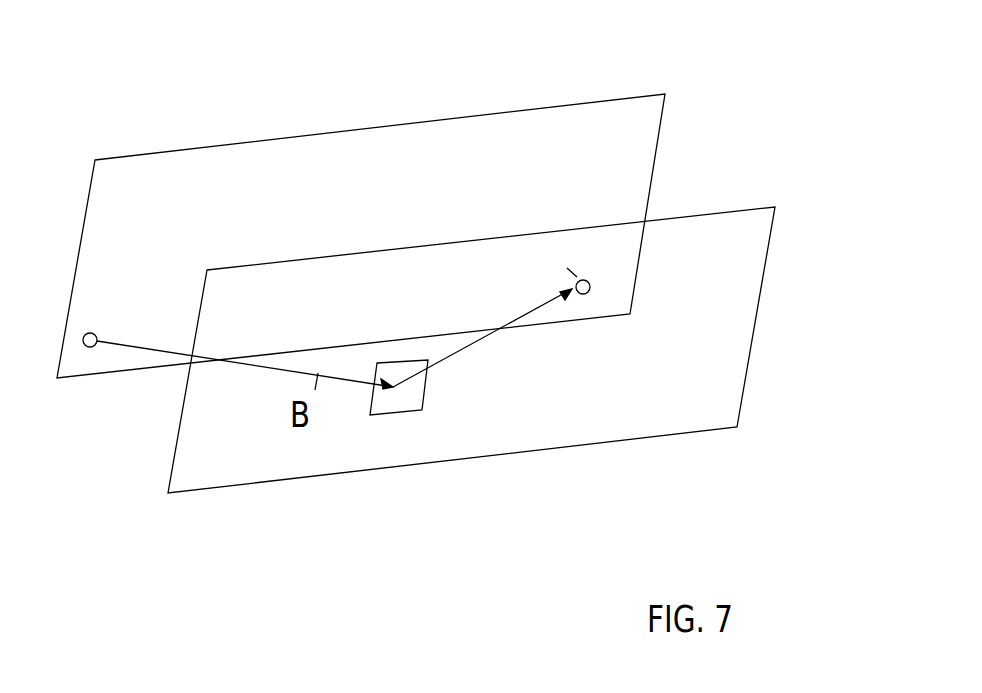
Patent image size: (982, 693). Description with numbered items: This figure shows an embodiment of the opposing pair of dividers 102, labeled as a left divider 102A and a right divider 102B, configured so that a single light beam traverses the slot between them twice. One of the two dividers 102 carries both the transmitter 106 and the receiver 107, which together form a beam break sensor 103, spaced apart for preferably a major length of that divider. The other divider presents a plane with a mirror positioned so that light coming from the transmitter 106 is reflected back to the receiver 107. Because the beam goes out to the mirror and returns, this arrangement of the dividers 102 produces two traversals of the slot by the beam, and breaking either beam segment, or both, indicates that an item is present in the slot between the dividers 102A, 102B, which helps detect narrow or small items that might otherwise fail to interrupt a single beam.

The divider 102A is at (570, 125).
The divider 102B is at (755, 228).
The divider 102 is at (443, 387).
The beam break sensor 103 is at (103, 288).
The transmitter 106 is at (108, 322).
The receiver 107 is at (482, 316).